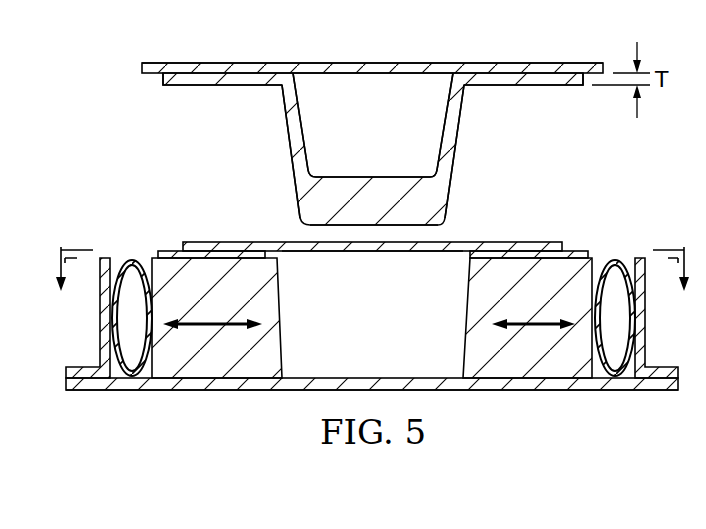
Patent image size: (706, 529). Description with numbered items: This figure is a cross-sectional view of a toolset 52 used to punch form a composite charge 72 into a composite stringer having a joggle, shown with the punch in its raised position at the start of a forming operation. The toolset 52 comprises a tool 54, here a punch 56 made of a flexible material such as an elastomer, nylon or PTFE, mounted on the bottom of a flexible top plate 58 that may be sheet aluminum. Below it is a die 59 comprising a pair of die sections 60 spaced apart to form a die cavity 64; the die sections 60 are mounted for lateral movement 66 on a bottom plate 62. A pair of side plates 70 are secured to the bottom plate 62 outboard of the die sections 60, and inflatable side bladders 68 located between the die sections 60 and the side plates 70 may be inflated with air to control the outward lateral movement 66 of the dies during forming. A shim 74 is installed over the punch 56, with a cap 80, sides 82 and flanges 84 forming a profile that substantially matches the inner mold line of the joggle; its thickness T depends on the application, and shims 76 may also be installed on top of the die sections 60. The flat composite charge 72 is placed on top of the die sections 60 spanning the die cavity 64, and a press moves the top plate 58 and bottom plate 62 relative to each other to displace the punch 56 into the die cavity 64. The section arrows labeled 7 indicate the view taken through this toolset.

The toolset 52 is at (112, 105).
The tool 54 is at (422, 48).
The punch 56 is at (387, 134).
The top plate 58 is at (187, 62).
The die 59 is at (524, 410).
The die sections 60 is at (270, 302).
The bottom plate 62 is at (178, 391).
The die cavity 64 is at (292, 252).
The lateral movement 66 is at (228, 322).
The inflatable side bladders 68 is at (130, 262).
The side plates 70 is at (103, 333).
The composite charge 72 is at (228, 242).
The shim 74 is at (291, 142).
The shims 76 is at (172, 251).
The cap 80 is at (446, 223).
The sides 82 is at (284, 103).
The flanges 84 is at (181, 87).
The section line 7- 7 is at (375, 285).